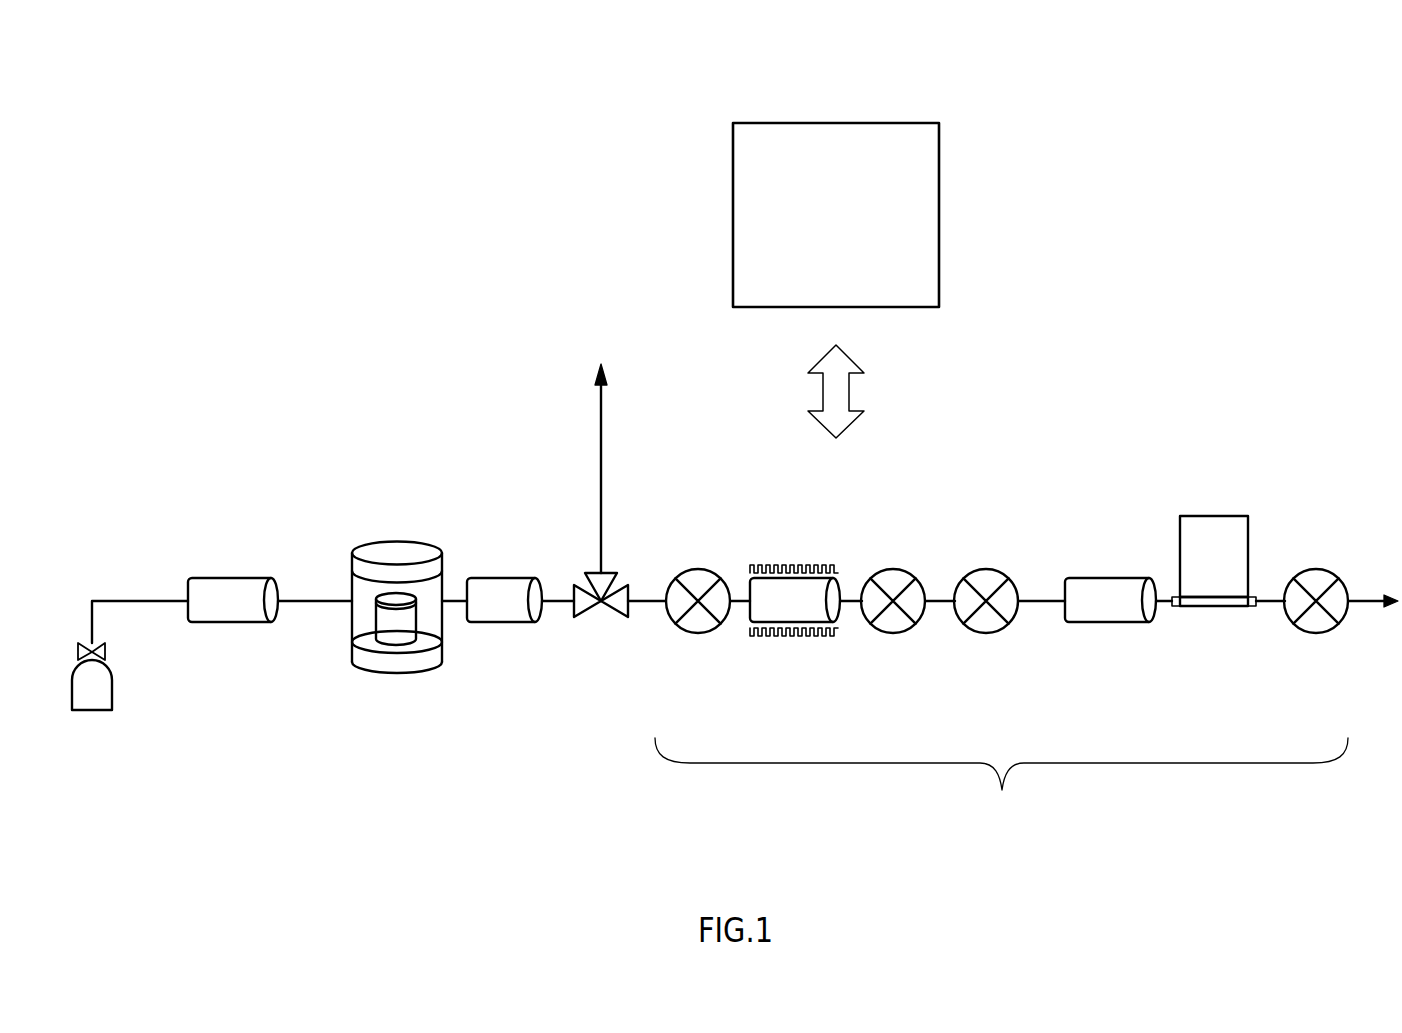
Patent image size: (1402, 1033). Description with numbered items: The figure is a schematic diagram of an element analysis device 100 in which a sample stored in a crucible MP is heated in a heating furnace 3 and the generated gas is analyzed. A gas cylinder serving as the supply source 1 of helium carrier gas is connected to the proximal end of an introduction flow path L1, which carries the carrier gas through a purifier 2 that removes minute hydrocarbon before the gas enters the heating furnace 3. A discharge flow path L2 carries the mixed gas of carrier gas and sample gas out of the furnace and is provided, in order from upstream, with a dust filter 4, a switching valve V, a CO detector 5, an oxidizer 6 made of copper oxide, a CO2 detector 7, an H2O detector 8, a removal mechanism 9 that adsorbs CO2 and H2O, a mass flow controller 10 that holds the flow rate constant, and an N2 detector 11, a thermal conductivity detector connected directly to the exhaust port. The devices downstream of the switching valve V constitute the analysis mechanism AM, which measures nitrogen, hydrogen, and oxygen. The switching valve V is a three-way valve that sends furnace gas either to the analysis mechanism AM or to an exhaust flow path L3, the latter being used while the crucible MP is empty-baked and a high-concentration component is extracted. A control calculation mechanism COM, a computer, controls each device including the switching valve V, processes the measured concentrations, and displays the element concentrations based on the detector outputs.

The element analysis device 100 is at (262, 118).
The supply source 1 is at (95, 712).
The purifier 2 is at (235, 623).
The heating furnace 3 is at (397, 676).
The dust filter 4 is at (500, 577).
The CO detector 5 is at (699, 634).
The oxidizer 6 is at (793, 637).
The CO2 detector 7 is at (894, 634).
The H2O detector 8 is at (987, 634).
The removal mechanism 9 is at (1110, 577).
The mass flow controller 10 is at (1212, 515).
The N2 detector 11 is at (1317, 634).
The introduction flow path L1 is at (244, 488).
The discharge flow path L2 is at (1019, 475).
The exhaust flow path L3 is at (585, 400).
The switching valve V is at (592, 573).
The crucible MP is at (376, 614).
The control calculation mechanism COM is at (835, 122).
The analysis mechanism AM is at (1001, 779).